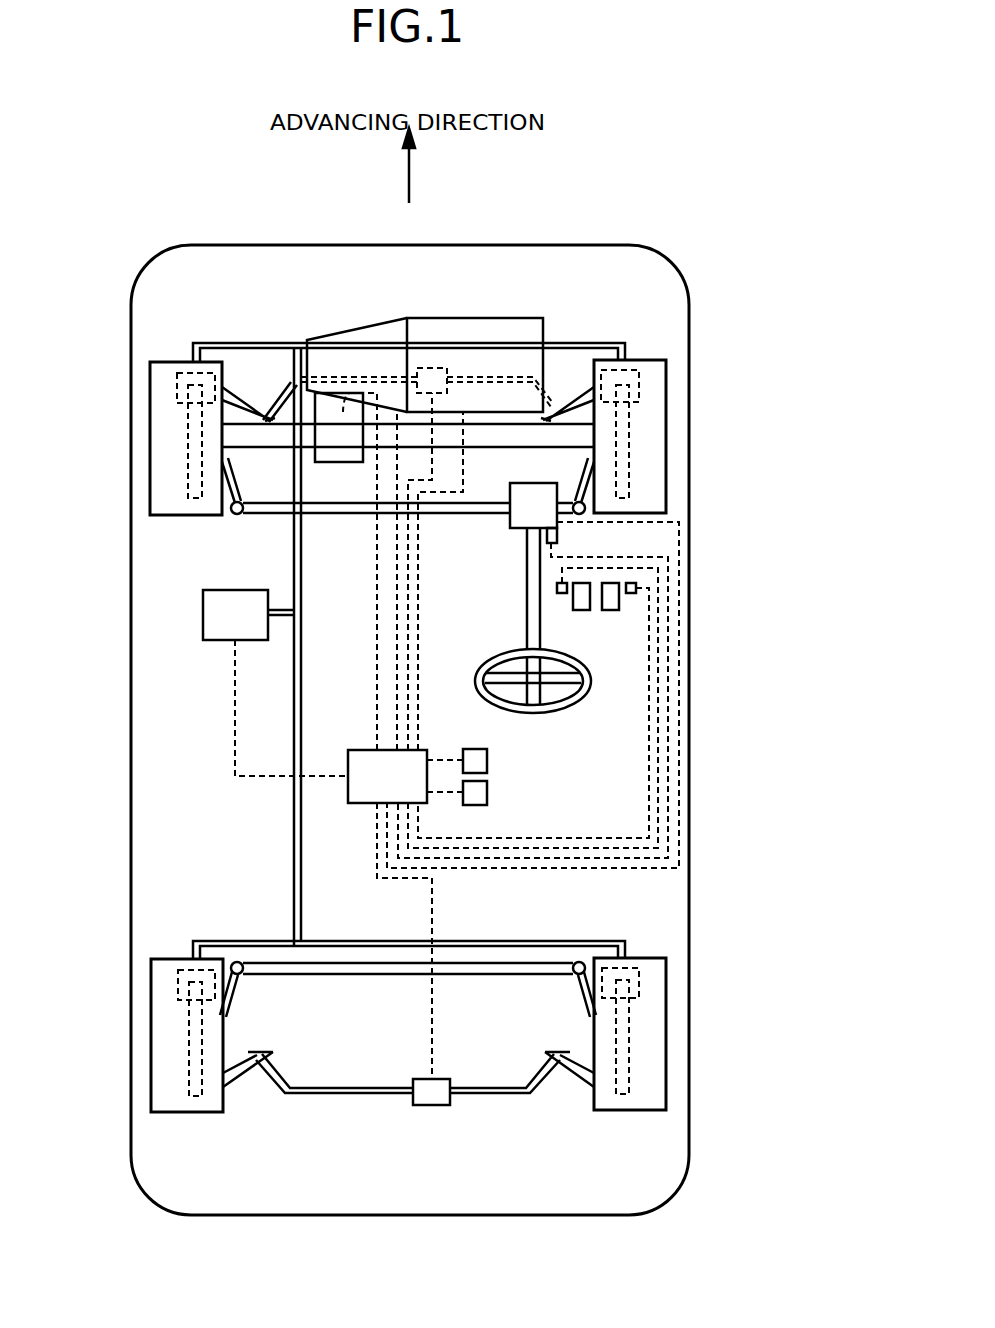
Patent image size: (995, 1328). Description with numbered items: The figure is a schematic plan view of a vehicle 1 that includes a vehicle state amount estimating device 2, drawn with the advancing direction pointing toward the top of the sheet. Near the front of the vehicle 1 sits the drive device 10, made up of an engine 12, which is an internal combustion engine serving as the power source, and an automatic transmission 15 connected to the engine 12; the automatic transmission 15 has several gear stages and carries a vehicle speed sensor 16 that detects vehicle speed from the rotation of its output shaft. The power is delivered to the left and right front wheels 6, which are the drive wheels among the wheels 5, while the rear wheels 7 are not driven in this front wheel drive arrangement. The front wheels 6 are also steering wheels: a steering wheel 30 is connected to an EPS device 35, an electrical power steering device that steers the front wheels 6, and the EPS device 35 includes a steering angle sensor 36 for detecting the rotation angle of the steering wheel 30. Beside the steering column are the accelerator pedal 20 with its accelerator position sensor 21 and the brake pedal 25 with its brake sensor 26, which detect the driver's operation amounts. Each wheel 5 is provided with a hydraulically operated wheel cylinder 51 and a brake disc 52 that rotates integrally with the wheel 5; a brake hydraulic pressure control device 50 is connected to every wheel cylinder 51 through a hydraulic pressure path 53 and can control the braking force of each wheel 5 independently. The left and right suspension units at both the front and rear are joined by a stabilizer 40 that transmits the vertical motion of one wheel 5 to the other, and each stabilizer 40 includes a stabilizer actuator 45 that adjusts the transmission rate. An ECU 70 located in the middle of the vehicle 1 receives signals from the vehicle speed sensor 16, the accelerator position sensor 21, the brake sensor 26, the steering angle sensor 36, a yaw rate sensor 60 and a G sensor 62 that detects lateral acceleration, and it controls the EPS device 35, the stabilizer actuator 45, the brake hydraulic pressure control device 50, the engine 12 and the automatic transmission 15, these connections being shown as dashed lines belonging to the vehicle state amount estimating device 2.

The vehicle 1 is at (179, 184).
The vehicle state amount estimating device 2 is at (670, 888).
The wheels 5 is at (411, 736).
The front wheels 6 is at (152, 476).
The rear wheel 7 is at (152, 1073).
The drive device 10 is at (306, 320).
The engine 12 is at (527, 318).
The automatic transmission 15 is at (358, 327).
The vehicle speed sensor 16 is at (339, 427).
The accelerator pedal 20 is at (610, 610).
The accelerator position sensor 21 is at (631, 593).
The brake pedal 25 is at (582, 610).
The brake sensor 26 is at (562, 593).
The steering wheel 30 is at (574, 706).
The EPS device 35 is at (537, 483).
The steering angle sensor 36 is at (557, 537).
The stabilizer 40 is at (270, 395).
The stabilizer actuator 45 is at (432, 368).
The brake hydraulic pressure control device 50 is at (213, 640).
The wheel cylinder 51 is at (177, 378).
The brake disc 52 is at (152, 437).
The hydraulic pressure path 53 is at (294, 850).
The yaw rate sensor 60 is at (487, 760).
The G sensor 62 is at (487, 792).
The ECU 70 is at (362, 750).